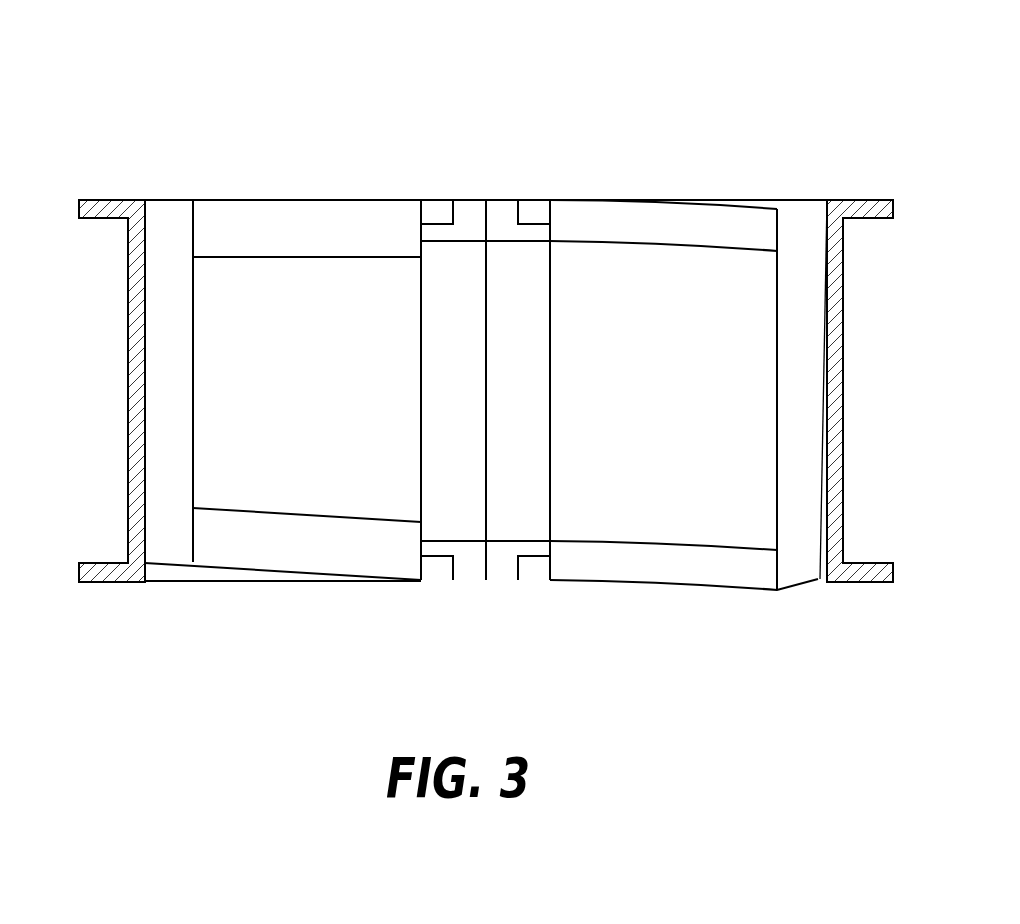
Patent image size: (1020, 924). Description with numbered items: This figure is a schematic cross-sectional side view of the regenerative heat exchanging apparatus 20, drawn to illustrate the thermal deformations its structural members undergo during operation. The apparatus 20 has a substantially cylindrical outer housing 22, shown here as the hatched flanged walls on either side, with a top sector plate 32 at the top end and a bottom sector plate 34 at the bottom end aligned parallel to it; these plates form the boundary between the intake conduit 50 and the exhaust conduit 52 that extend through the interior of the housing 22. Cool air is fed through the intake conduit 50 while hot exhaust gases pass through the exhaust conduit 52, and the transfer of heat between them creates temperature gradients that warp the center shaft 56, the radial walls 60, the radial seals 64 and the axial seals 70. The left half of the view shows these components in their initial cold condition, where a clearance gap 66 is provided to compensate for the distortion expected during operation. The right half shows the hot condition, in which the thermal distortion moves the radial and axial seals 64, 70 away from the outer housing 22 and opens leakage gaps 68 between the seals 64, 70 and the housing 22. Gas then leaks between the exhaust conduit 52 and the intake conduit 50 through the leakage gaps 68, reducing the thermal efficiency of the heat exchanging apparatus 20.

The heat exchanging apparatus 20 is at (774, 87).
The outer housing 22 is at (132, 498).
The top sector plate 32 is at (720, 202).
The bottom sector plate 34 is at (228, 580).
The intake conduit 50 is at (300, 453).
The exhaust conduit 52 is at (672, 453).
The center shaft 56 is at (527, 248).
The radial walls 60 is at (198, 388).
The radial seals 64 is at (312, 222).
The clearance gap 66 is at (163, 572).
The leakage gaps 68 is at (793, 207).
The axial seals 70 is at (157, 284).